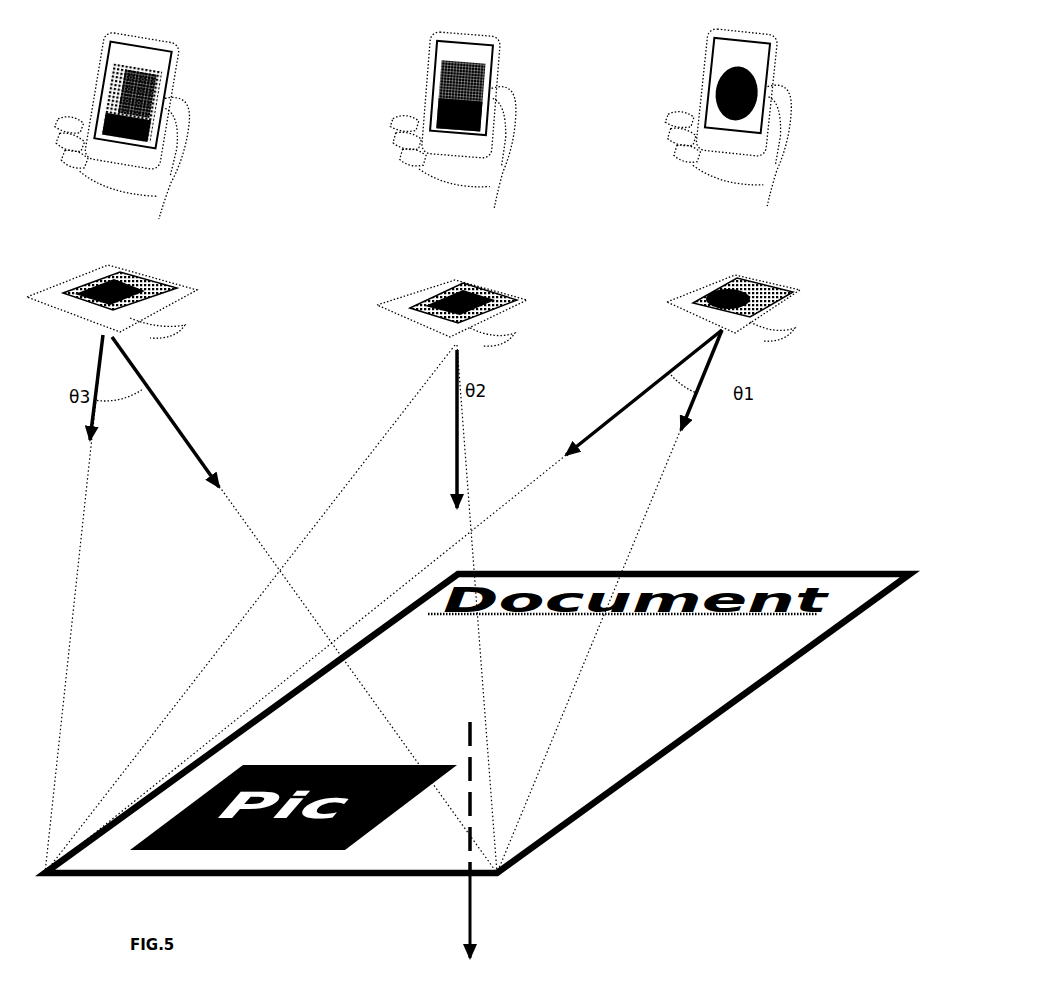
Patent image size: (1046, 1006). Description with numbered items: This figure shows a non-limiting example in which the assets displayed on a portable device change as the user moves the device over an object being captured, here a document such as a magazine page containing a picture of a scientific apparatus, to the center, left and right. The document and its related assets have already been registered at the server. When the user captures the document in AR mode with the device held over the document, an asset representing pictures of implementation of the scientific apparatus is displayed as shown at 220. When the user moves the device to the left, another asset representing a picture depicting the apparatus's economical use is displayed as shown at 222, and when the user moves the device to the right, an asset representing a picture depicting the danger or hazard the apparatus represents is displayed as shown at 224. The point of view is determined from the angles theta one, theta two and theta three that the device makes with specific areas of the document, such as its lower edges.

The asset display at center position 220 is at (533, 190).
The asset display at left position 222 is at (208, 192).
The asset display at right position 224 is at (808, 182).